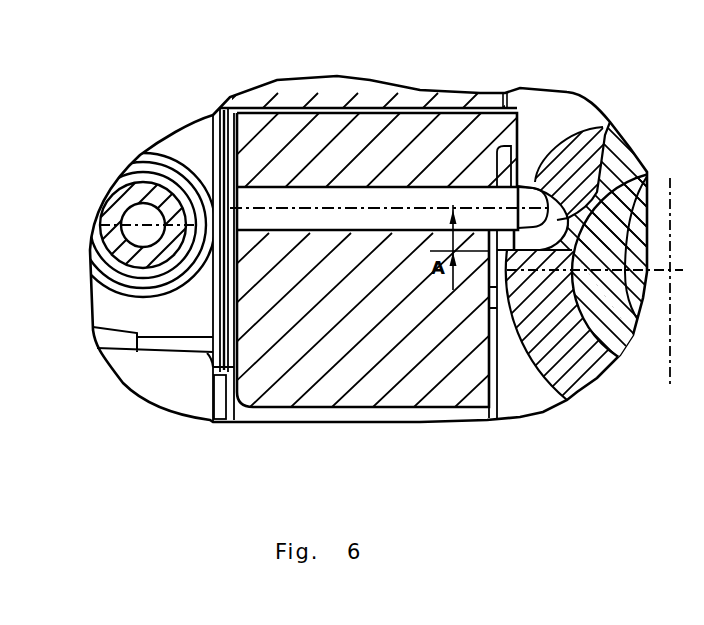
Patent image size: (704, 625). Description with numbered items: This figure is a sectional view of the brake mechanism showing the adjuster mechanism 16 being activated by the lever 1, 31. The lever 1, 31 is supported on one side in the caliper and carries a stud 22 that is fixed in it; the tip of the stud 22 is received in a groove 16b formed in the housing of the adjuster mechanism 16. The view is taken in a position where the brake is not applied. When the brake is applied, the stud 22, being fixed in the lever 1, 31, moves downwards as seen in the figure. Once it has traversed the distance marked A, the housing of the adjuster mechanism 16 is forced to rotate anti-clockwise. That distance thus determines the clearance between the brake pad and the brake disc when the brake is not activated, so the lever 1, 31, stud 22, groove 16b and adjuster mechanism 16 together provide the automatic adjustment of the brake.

The lever 1 is at (362, 302).
The lever 31 is at (408, 393).
The stud 22 is at (431, 193).
The adjuster mechanism 16 is at (573, 374).
The groove 16b is at (610, 122).